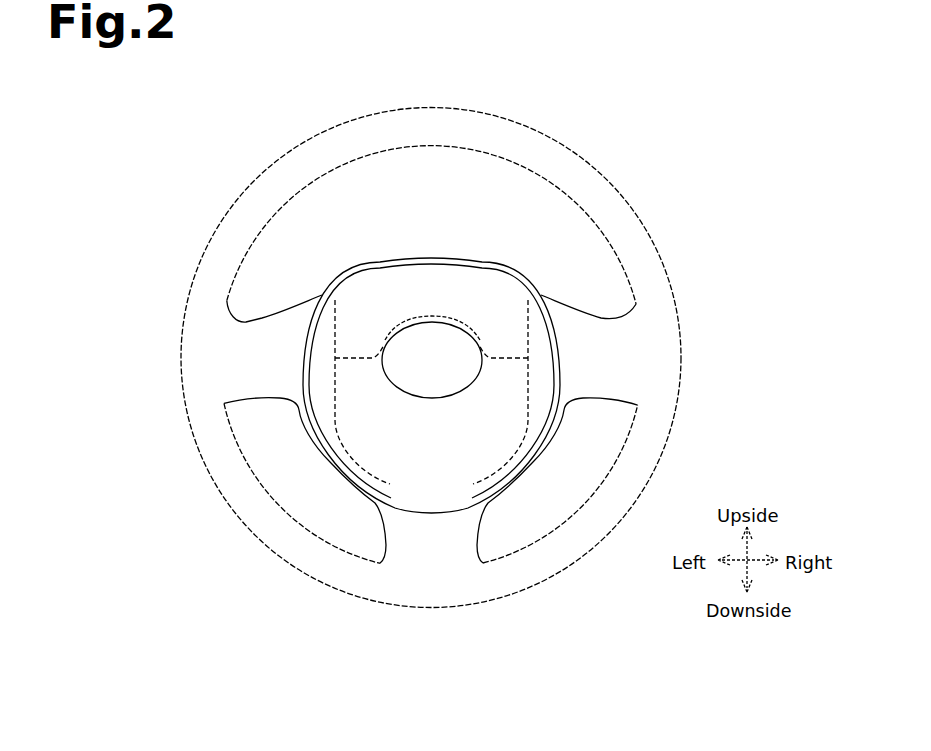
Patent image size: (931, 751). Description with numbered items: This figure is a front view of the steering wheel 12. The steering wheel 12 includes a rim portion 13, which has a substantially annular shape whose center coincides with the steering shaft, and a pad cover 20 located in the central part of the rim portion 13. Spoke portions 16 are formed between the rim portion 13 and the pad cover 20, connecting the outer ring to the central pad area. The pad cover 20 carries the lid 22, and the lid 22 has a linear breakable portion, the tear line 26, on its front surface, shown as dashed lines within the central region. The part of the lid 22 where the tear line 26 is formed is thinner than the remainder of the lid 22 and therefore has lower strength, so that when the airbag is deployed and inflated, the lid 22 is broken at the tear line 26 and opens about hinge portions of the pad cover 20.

The steering wheel 12 is at (619, 144).
The rim portion 13 is at (647, 232).
The spoke portions 16 is at (276, 312).
The pad cover 20 is at (498, 249).
The lid 22 is at (435, 264).
The tear line 26 is at (374, 345).